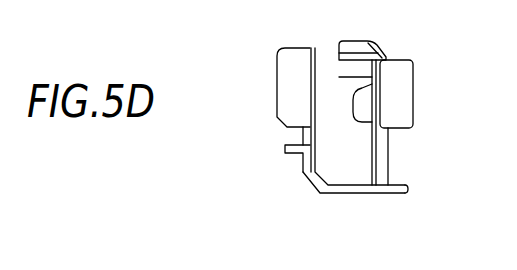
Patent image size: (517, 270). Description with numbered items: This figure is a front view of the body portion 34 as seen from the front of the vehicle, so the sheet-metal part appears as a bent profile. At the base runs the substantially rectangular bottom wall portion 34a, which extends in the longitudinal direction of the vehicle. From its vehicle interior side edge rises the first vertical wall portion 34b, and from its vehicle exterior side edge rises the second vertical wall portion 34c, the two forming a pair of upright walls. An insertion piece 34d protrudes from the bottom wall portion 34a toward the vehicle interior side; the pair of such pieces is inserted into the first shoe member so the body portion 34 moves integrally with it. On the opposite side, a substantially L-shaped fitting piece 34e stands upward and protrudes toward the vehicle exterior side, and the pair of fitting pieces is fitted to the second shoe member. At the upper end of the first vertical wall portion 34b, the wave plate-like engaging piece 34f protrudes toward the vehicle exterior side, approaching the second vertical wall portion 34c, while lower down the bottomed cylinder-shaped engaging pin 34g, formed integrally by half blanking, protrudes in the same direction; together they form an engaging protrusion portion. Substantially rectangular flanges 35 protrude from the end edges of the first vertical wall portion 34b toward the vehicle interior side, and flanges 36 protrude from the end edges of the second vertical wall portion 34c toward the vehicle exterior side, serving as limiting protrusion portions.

The body portion 34 is at (296, 43).
The bottom wall portion 34a is at (345, 194).
The first vertical wall portion 34b is at (389, 162).
The second vertical wall portion 34c is at (300, 142).
The insertion piece 34d is at (408, 187).
The fitting piece 34e is at (295, 157).
The engaging piece 34f is at (366, 39).
The engaging pin 34g is at (372, 87).
The flange 35 is at (408, 108).
The flange 36 is at (286, 63).